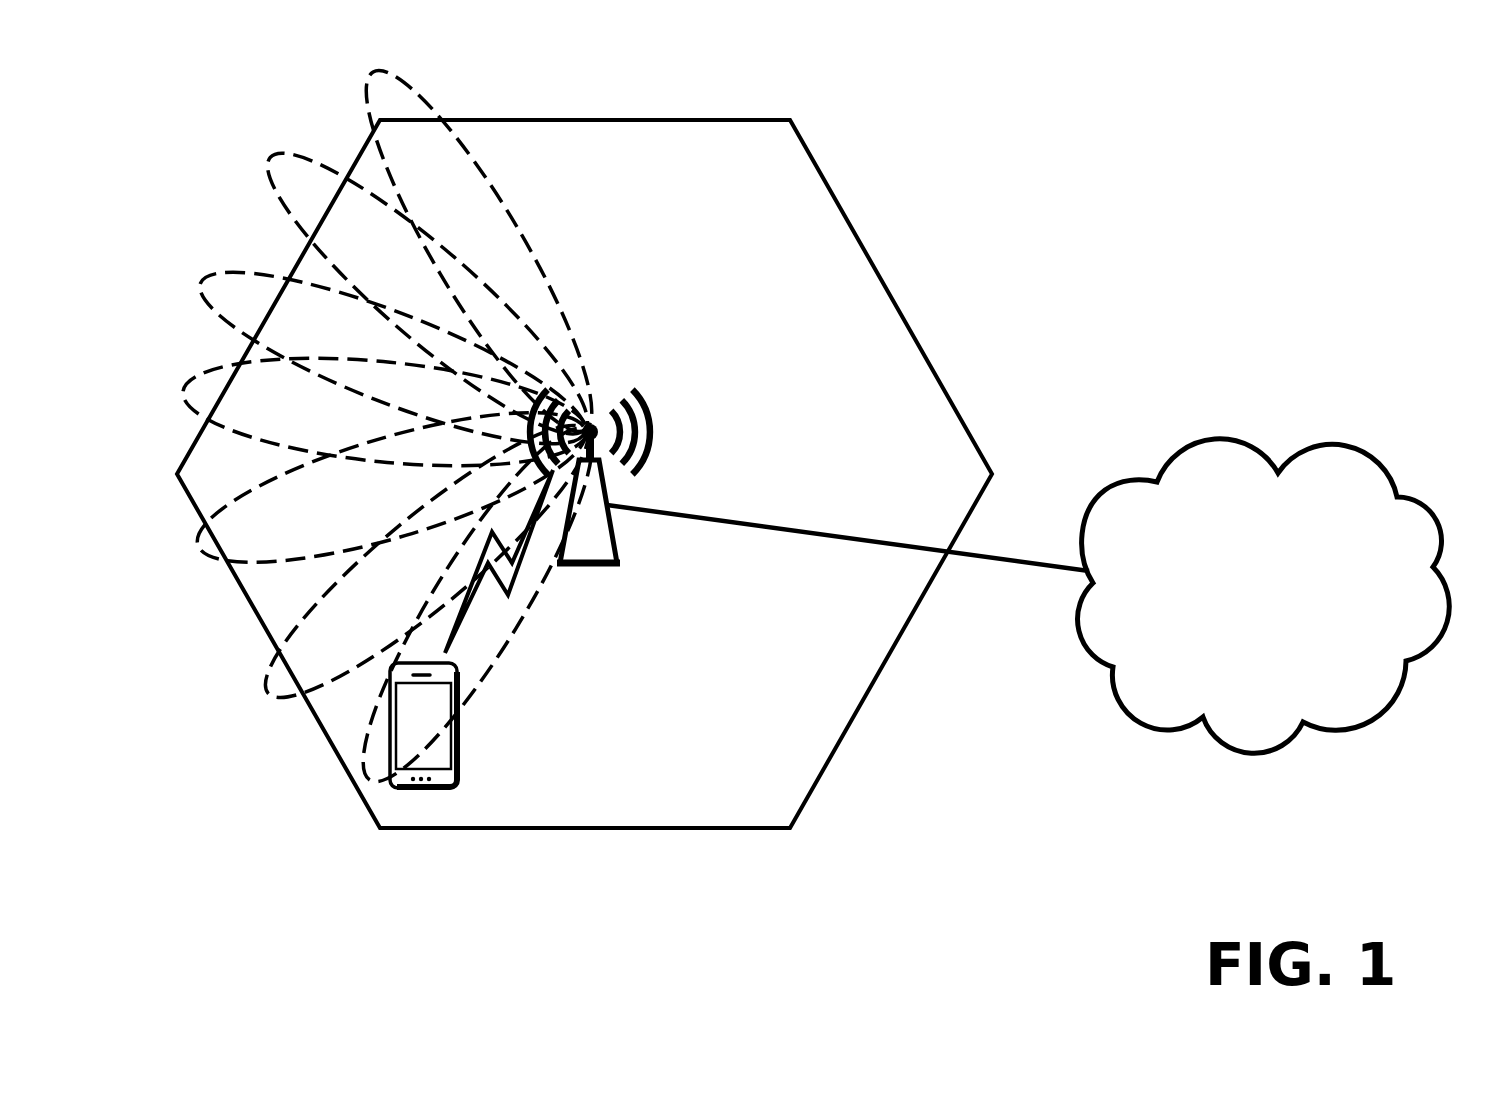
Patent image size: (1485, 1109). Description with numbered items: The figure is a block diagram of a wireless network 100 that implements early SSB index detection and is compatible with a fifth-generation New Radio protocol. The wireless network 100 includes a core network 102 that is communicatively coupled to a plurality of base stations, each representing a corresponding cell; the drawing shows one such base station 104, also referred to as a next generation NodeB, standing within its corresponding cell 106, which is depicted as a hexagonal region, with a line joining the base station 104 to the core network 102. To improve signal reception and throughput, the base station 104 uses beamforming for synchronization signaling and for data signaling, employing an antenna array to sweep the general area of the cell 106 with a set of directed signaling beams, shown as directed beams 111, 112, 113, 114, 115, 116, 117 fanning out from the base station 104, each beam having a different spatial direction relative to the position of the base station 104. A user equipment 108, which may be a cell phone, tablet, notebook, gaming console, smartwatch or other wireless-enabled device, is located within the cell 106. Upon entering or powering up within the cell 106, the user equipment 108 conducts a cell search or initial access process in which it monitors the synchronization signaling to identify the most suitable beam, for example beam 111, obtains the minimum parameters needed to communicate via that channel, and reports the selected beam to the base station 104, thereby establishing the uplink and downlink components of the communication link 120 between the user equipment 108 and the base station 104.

The wireless network 100 is at (1010, 134).
The core network 102 is at (1028, 596).
The base station 104 is at (620, 557).
The cell 106 is at (847, 220).
The user equipment 108 is at (423, 725).
The directed beam 111 is at (368, 778).
The directed beam 112 is at (268, 692).
The directed beam 113 is at (203, 552).
The directed beam 114 is at (190, 417).
The directed beam 115 is at (210, 307).
The directed beam 116 is at (275, 192).
The directed beam 117 is at (370, 80).
The communication link 120 is at (517, 583).